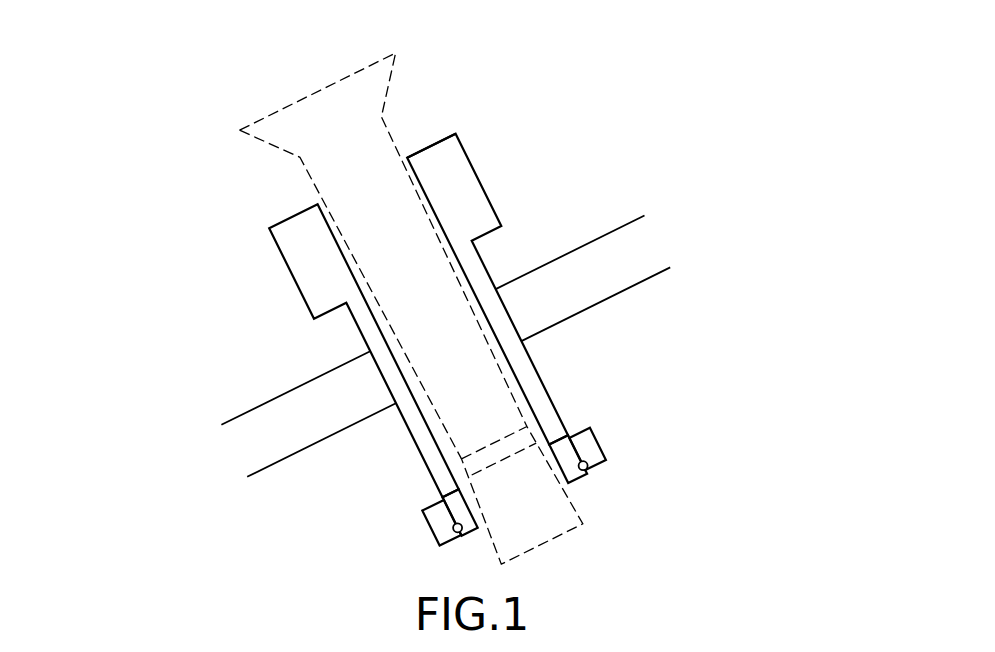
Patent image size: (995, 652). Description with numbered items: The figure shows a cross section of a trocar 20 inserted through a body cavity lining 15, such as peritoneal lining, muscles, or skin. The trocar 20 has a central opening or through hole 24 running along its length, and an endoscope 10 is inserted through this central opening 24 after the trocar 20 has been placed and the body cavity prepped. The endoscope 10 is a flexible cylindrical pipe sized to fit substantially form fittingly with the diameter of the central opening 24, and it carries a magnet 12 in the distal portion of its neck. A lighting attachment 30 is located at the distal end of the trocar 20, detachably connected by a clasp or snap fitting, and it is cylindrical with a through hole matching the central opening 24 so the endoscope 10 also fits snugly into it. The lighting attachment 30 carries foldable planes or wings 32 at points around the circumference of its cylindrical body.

The endoscope 10 is at (347, 83).
The magnet 12 is at (526, 438).
The body cavity lining 15 is at (619, 245).
The trocar 20 is at (469, 185).
The central opening 24 is at (406, 155).
The lighting attachment 30 is at (572, 476).
The wings 32 is at (605, 450).